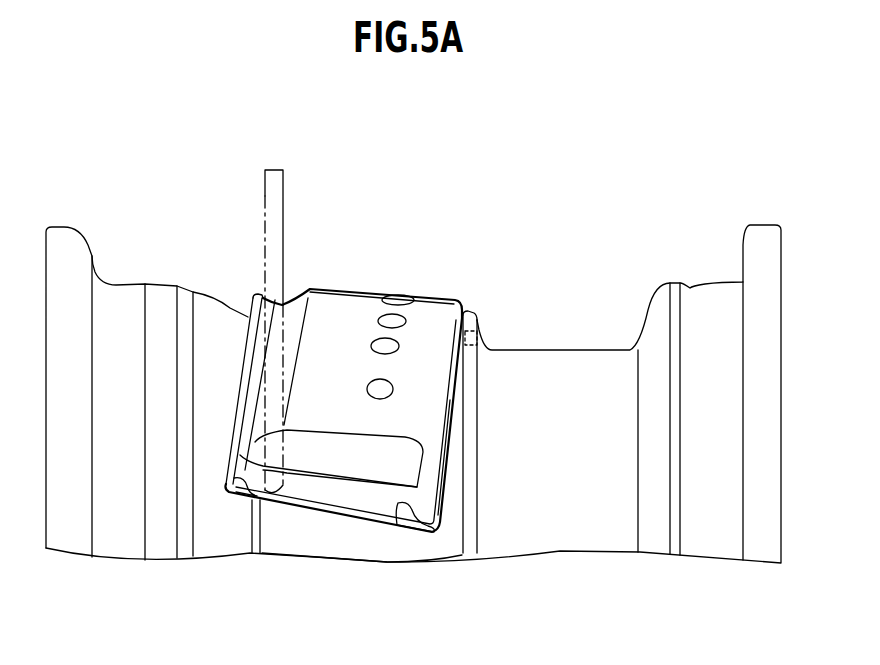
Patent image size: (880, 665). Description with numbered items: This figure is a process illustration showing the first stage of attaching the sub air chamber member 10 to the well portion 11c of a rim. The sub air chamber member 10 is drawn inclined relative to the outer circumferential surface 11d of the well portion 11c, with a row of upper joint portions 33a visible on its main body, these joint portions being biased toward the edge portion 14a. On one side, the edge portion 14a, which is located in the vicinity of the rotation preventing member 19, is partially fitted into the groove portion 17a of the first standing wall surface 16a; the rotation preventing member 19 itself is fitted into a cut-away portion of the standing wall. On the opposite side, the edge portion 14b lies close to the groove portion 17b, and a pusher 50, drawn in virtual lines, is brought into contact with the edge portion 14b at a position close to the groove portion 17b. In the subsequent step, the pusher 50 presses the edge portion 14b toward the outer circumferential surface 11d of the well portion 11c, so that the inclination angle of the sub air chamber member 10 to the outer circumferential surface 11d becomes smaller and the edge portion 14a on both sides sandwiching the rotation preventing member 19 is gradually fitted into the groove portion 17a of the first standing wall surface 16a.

The sub air chamber member 10 is at (357, 283).
The pusher 50 is at (284, 190).
The edge portion 14a is at (452, 450).
The edge portion 14b is at (250, 316).
The first standing wall surface 16a is at (465, 505).
The rotation preventing member 19 is at (478, 342).
The upper joint portions 33a is at (396, 347).
The groove portion 17a is at (453, 538).
The groove portion 17b is at (273, 533).
The well portion 11c is at (592, 516).
The outer circumferential surface 11d is at (338, 543).